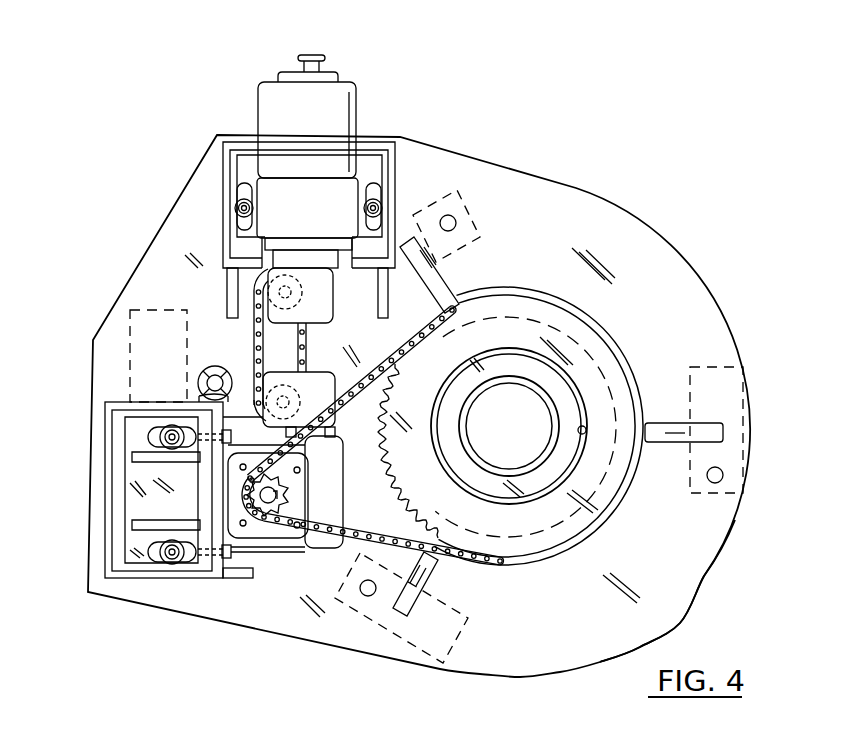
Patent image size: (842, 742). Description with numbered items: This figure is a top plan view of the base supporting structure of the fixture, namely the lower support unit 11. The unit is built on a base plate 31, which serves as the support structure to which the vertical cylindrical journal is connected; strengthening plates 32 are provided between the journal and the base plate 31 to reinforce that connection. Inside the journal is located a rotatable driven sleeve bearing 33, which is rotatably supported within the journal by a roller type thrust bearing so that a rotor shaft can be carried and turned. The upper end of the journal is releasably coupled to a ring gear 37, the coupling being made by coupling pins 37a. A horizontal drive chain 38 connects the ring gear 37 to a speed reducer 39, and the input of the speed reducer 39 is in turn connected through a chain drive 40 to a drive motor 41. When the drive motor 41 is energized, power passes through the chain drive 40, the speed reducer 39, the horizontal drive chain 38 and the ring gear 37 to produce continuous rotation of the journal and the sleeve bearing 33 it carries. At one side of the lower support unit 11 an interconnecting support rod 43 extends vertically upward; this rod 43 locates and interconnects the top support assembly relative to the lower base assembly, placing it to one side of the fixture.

The lower support unit 11 is at (568, 178).
The base plate 31 is at (662, 606).
The strengthening plates 32 is at (438, 288).
The driven sleeve bearing 33 is at (565, 470).
The ring gear 37 is at (383, 461).
The coupling pins 37a is at (586, 431).
The horizontal drive chain 38 is at (381, 535).
The speed reducer 39 is at (297, 558).
The chain drive 40 is at (254, 352).
The drive motor 41 is at (351, 108).
The interconnecting support rod 43 is at (200, 374).